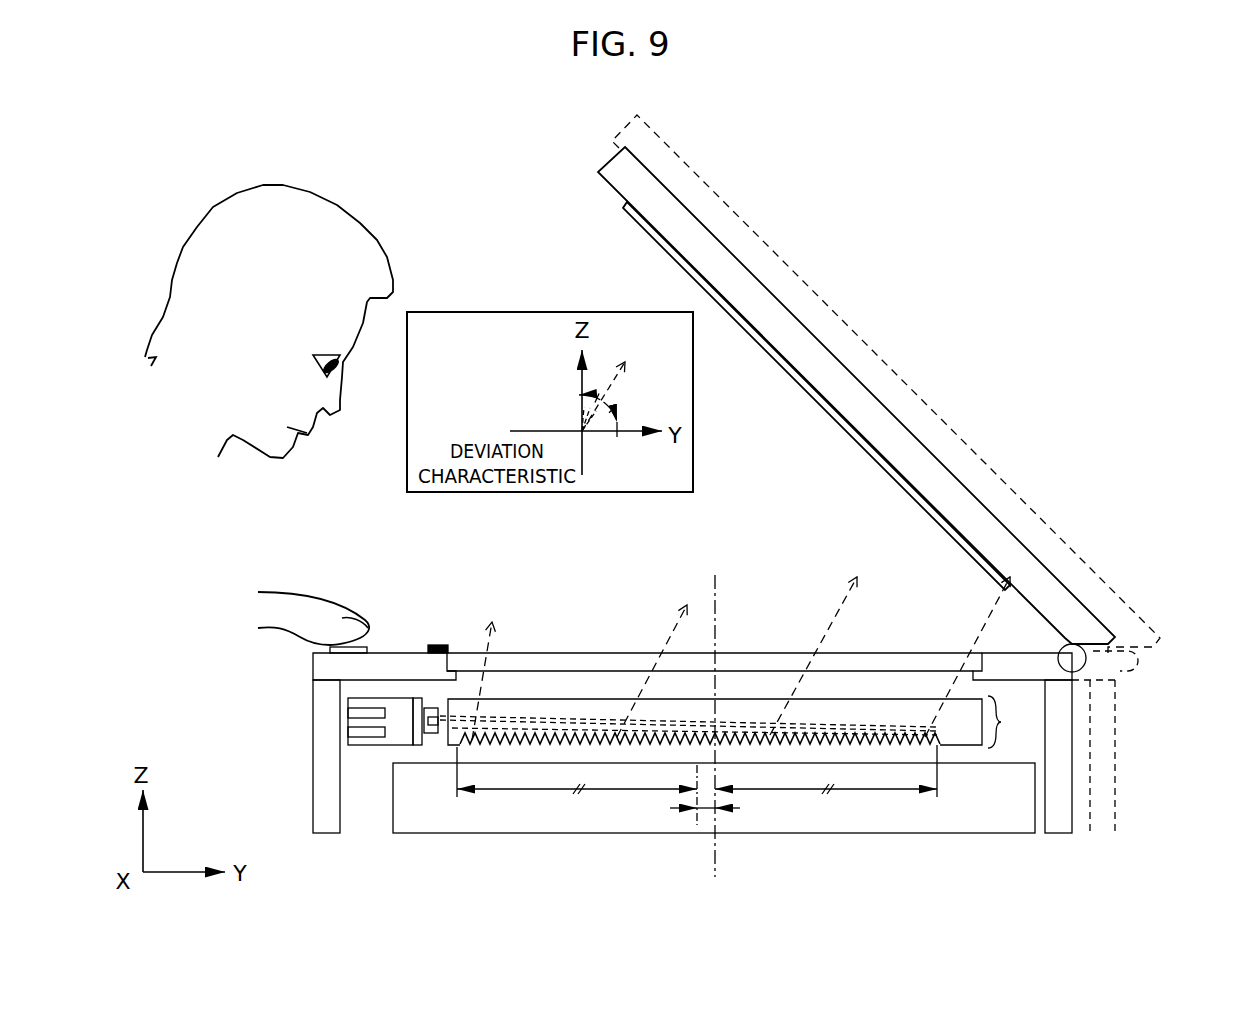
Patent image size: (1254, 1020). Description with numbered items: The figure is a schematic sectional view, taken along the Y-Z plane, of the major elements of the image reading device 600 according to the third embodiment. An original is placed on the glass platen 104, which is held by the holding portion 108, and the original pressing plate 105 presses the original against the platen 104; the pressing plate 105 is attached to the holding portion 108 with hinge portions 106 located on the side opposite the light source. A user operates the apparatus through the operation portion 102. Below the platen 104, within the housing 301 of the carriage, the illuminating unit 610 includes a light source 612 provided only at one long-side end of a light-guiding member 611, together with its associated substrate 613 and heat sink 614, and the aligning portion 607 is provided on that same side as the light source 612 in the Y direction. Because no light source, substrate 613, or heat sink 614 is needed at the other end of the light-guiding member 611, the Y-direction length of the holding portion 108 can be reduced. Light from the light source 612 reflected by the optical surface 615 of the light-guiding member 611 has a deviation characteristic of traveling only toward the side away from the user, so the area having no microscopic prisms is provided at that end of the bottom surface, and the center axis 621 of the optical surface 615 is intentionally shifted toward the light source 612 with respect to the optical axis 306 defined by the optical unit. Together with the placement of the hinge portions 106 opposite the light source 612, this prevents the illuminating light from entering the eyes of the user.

The image reading device 600 is at (772, 131).
The original pressing plate 105 is at (948, 497).
The hinge portions 106 is at (1080, 663).
The holding portion 108 is at (320, 669).
The platen 104 is at (548, 660).
The operation portion 102 is at (372, 650).
The aligning portion 607 is at (443, 643).
The connector 614 is at (368, 746).
The substrate 613 is at (413, 746).
The light source 612 is at (428, 734).
The illuminating unit 610 is at (743, 746).
The light-guiding member 611 is at (903, 713).
The optical surface 615 is at (847, 740).
The housing 301 is at (553, 822).
The optical axis 306 is at (718, 845).
The center axis 621 is at (695, 817).